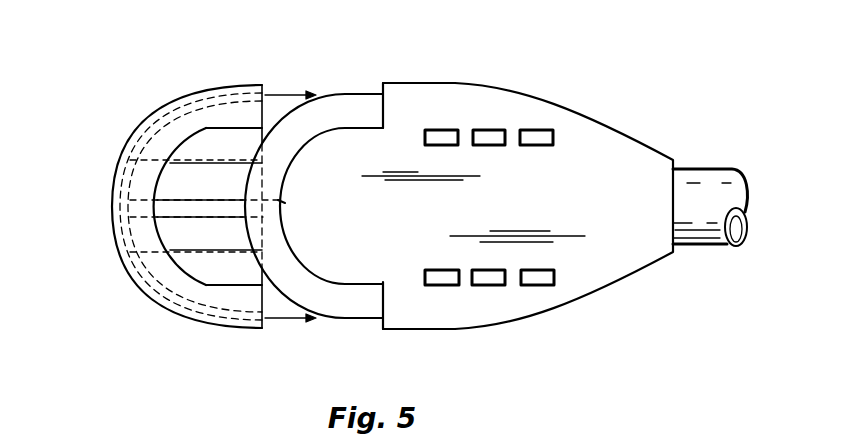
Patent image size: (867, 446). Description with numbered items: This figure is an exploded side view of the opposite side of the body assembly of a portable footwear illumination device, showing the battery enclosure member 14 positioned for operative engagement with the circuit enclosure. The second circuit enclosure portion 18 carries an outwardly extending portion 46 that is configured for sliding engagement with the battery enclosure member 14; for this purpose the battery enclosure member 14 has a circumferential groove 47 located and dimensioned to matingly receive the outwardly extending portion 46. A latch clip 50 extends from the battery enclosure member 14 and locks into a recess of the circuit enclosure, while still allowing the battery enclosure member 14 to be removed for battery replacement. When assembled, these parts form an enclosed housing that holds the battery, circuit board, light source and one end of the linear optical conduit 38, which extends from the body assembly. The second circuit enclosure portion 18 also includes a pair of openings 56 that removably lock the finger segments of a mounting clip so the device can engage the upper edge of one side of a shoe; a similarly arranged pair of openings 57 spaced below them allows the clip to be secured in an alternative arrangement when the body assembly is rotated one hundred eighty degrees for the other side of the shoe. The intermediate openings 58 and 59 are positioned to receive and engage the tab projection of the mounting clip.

The battery enclosure member 14 is at (149, 296).
The second circuit enclosure portion 18 is at (605, 165).
The linear optical conduit 38 is at (722, 246).
The outwardly extending portion 46 is at (297, 133).
The circumferential groove 47 is at (166, 104).
The latch clip 50 is at (282, 202).
The pair of openings 56 is at (437, 130).
The pair of openings 57 is at (440, 286).
The intermediate opening 58 is at (488, 130).
The intermediate opening 59 is at (489, 286).